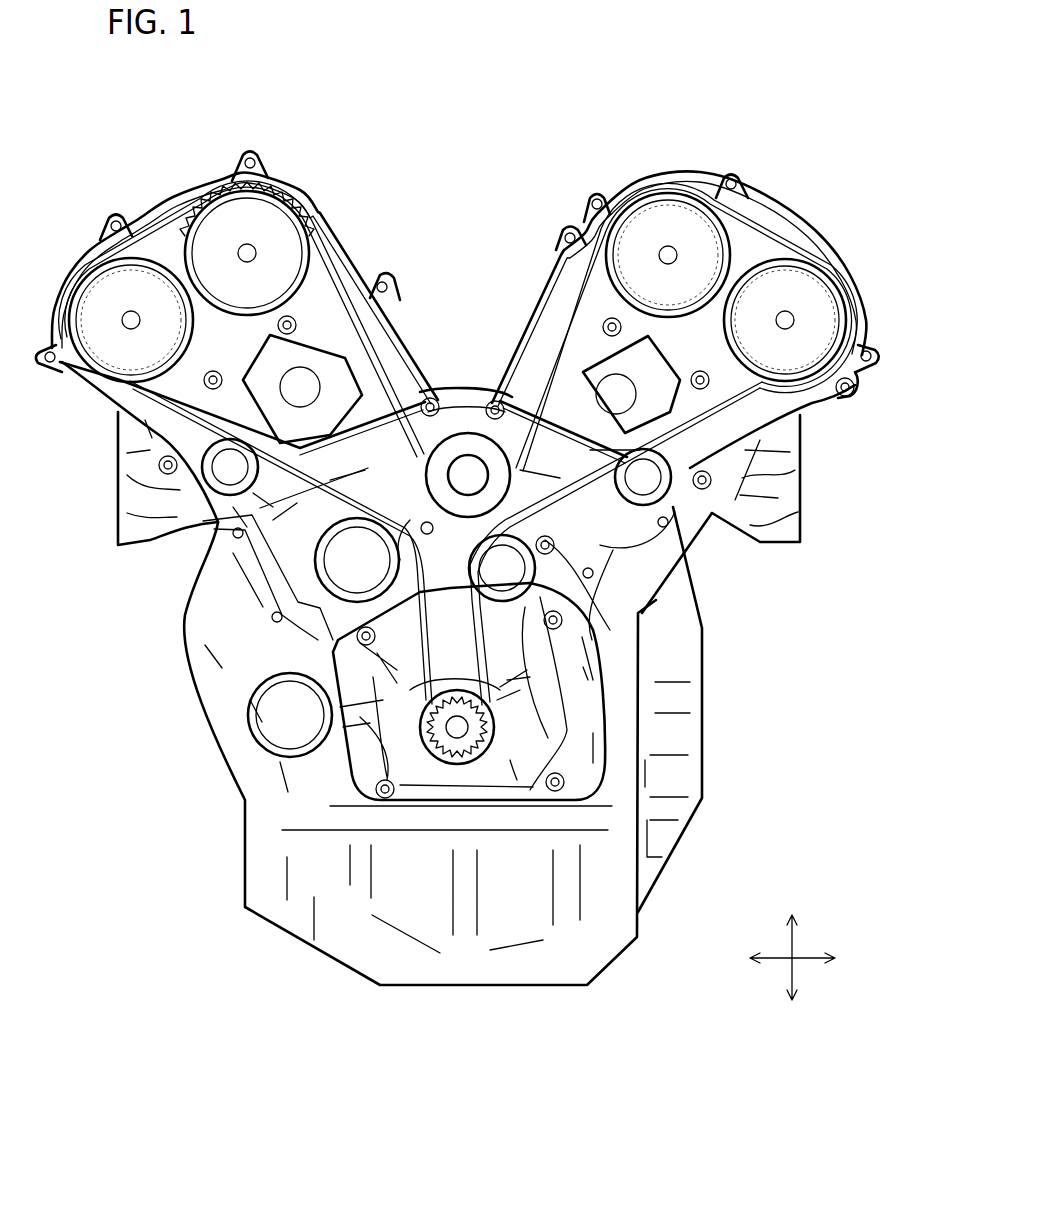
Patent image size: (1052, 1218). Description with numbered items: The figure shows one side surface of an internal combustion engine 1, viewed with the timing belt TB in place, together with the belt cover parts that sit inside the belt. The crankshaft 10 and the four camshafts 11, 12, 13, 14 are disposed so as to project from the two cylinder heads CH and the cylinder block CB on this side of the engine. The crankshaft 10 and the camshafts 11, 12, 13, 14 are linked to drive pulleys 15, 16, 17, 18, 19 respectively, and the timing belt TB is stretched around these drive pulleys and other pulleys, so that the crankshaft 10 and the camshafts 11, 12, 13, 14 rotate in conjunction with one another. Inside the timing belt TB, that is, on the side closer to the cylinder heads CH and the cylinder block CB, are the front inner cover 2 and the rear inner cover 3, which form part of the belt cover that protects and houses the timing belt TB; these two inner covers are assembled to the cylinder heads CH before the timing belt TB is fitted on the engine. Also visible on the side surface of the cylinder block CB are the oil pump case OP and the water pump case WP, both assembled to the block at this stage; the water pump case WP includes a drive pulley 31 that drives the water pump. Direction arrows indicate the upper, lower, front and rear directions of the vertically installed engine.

The internal combustion engine 1 is at (477, 118).
The front inner cover 2 is at (548, 260).
The rear inner cover 3 is at (352, 255).
The crankshaft 10 is at (486, 706).
The camshaft 11 is at (785, 316).
The camshaft 12 is at (668, 255).
The camshaft 13 is at (247, 253).
The camshaft 14 is at (131, 312).
The drive pulley 15 is at (470, 730).
The drive pulley 16 is at (820, 295).
The drive pulley 17 is at (673, 207).
The drive pulley 18 is at (272, 218).
The drive pulley 19 is at (100, 282).
The drive pulley 31 is at (466, 430).
The timing belt TB is at (405, 342).
The cylinder head CH is at (140, 498).
The cylinder block CB is at (620, 634).
The water pump case WP is at (620, 530).
The oil pump case OP is at (520, 705).